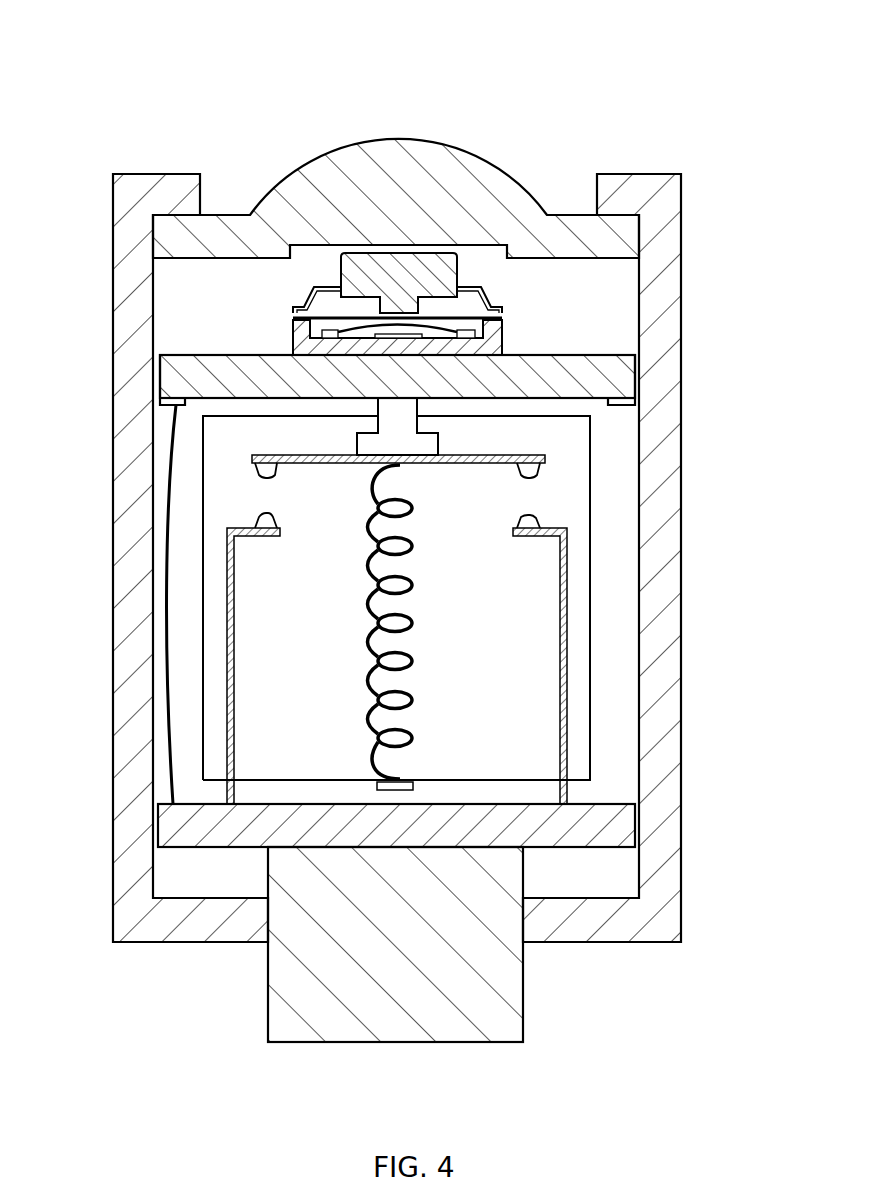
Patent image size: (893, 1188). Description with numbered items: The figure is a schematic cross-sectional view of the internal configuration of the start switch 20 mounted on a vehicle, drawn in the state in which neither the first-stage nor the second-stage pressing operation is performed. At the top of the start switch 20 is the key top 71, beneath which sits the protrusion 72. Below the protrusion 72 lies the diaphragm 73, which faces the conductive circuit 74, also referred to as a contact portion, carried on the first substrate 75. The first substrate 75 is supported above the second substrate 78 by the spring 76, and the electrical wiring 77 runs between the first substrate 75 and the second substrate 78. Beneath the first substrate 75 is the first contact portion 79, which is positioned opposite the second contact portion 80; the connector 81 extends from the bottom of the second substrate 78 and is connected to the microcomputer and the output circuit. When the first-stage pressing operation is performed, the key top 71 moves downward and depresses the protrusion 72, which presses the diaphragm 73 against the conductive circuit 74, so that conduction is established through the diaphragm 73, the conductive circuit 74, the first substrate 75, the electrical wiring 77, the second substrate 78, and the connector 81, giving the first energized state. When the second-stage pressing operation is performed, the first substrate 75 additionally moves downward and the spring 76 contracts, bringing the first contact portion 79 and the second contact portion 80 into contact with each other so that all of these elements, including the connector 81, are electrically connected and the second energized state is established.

The start switch 20 is at (398, 559).
The key top 71 is at (416, 153).
The protrusion 72 is at (381, 272).
The diaphragm 73 is at (385, 322).
The conductive circuit (contact portion) 74 is at (403, 327).
The first substrate 75 is at (606, 378).
The spring 76 is at (372, 485).
The electrical wiring 77 is at (168, 712).
The second substrate 78 is at (604, 822).
The first contact portion 79 is at (540, 470).
The second contact portion 80 is at (535, 520).
The connector 81 is at (412, 1032).